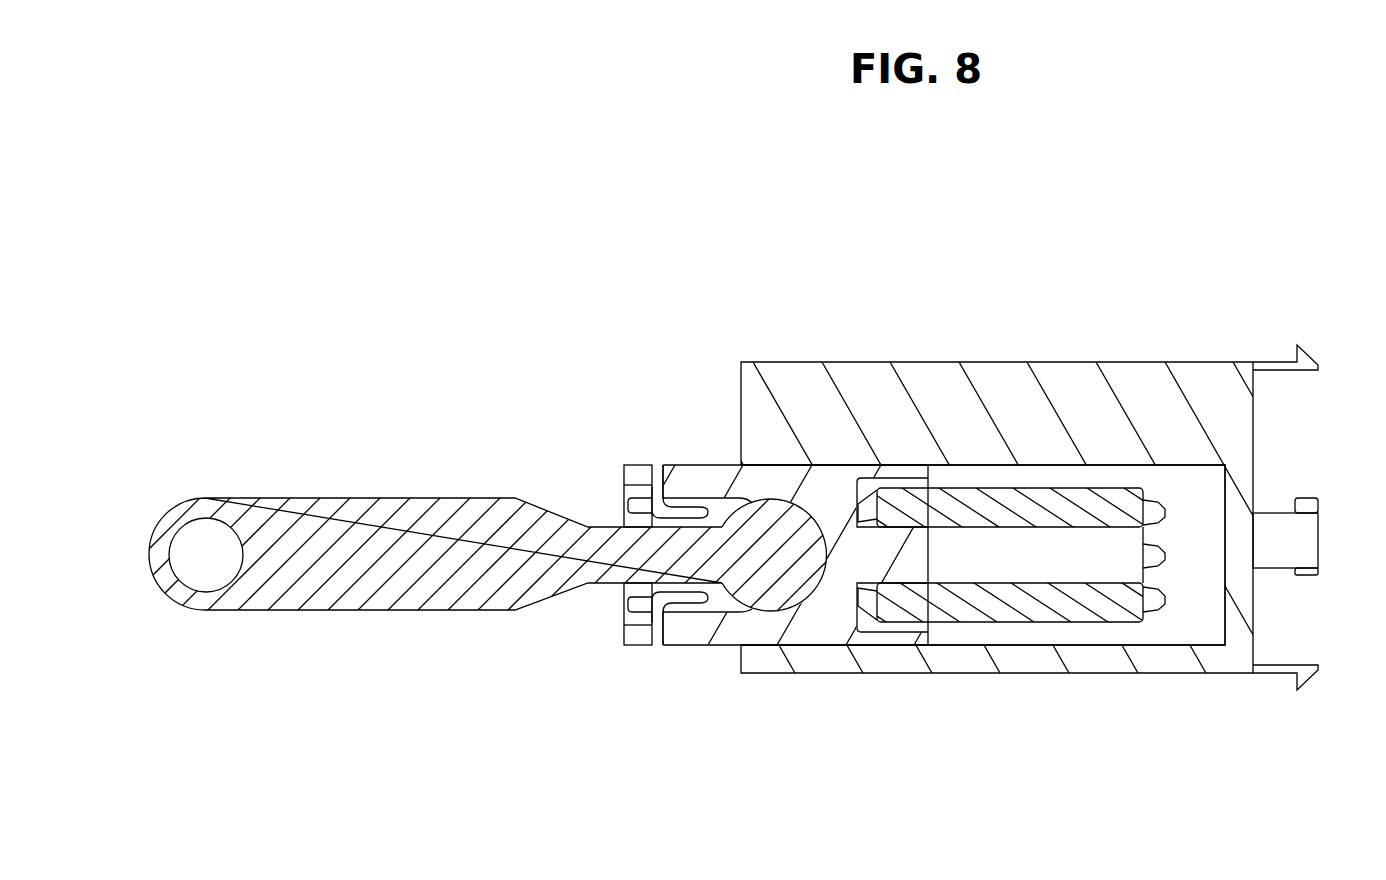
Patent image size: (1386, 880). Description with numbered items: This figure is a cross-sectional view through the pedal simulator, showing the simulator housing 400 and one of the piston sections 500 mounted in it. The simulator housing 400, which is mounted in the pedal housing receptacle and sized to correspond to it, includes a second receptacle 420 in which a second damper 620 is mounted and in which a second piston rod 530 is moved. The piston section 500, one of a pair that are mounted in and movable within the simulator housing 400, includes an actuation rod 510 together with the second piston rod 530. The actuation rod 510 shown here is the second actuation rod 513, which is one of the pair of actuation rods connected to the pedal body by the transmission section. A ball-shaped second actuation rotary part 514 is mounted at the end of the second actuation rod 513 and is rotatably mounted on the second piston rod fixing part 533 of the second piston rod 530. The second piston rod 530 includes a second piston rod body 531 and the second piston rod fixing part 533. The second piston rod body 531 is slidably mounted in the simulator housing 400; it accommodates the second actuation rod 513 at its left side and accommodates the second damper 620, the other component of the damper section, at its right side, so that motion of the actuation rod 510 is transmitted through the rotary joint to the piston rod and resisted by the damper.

The simulator housing 400 is at (1143, 362).
The second receptacle 420 is at (995, 472).
The piston section 500 is at (518, 556).
The actuation rod 510 is at (473, 429).
The second actuation rod 513 is at (338, 498).
The second actuation rotary part 514 is at (782, 537).
The second piston rod 530 is at (760, 669).
The second piston rod body 531 is at (807, 621).
The second piston rod fixing part 533 is at (693, 604).
The second damper 620 is at (1028, 623).